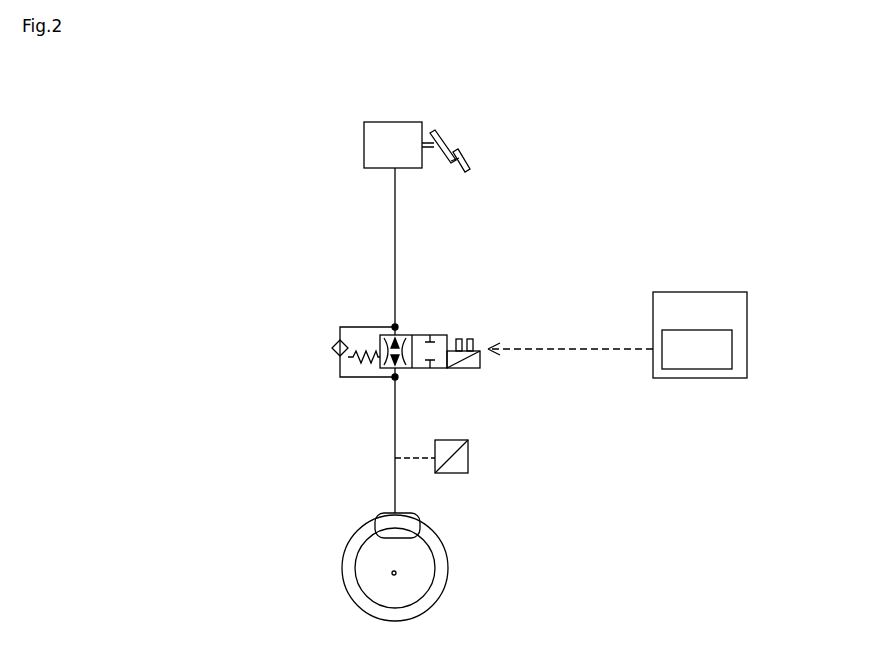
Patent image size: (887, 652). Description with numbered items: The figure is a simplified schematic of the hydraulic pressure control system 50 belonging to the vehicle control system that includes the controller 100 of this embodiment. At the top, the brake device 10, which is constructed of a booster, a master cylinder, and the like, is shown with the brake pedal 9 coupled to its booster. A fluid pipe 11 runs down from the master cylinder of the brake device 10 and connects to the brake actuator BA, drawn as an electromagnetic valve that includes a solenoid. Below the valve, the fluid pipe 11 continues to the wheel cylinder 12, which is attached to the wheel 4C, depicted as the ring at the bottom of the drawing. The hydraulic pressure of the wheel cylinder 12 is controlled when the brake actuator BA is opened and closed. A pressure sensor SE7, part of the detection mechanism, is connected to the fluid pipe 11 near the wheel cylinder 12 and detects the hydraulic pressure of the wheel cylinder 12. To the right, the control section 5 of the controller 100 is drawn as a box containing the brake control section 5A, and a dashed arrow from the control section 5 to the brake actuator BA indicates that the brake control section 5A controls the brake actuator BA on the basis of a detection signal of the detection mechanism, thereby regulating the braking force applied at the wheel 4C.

The controller 100 is at (790, 122).
The hydraulic pressure control system 50 is at (486, 248).
The brake device 10 is at (407, 168).
The brake pedal 9 is at (456, 173).
The fluid pipe 11 is at (395, 265).
The brake actuator BA is at (440, 369).
The control section 5 is at (747, 292).
The brake control section 5A is at (732, 341).
The pressure sensor SE7 is at (468, 447).
The wheel cylinder 12 is at (420, 516).
The wheel 4C is at (358, 535).